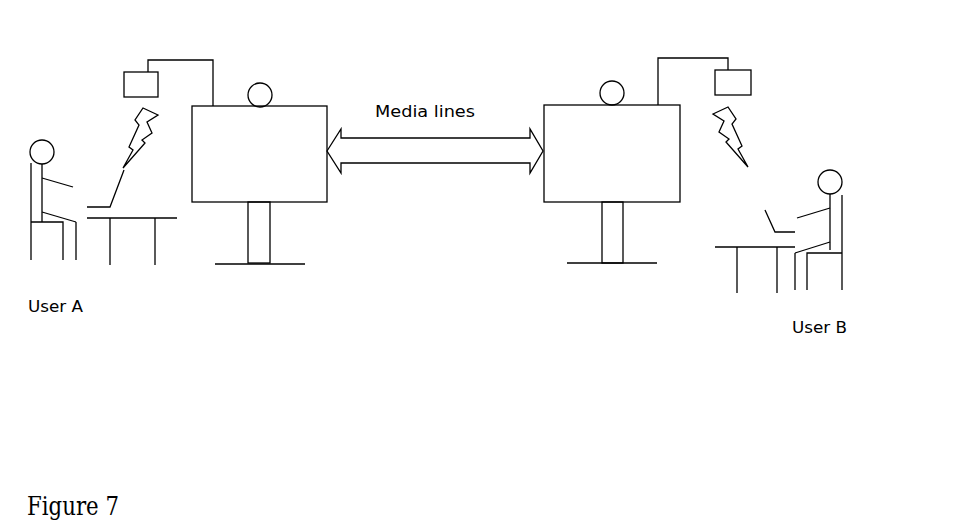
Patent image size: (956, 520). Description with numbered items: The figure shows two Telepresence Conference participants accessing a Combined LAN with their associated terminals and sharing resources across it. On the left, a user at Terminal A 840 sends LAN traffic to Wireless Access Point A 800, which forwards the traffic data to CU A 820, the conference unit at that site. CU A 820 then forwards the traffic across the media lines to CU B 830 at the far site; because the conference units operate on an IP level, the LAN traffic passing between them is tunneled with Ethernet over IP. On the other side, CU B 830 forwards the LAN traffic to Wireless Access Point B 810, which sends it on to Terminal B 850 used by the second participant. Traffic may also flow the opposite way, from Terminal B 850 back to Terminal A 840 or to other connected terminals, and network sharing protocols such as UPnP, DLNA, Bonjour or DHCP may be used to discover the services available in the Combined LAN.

The Wireless Access Point A 800 is at (129, 89).
The Wireless Access Point B 810 is at (749, 93).
The CU A 820 is at (269, 134).
The CU B 830 is at (608, 134).
The Terminal A 840 is at (139, 216).
The Terminal B 850 is at (740, 243).